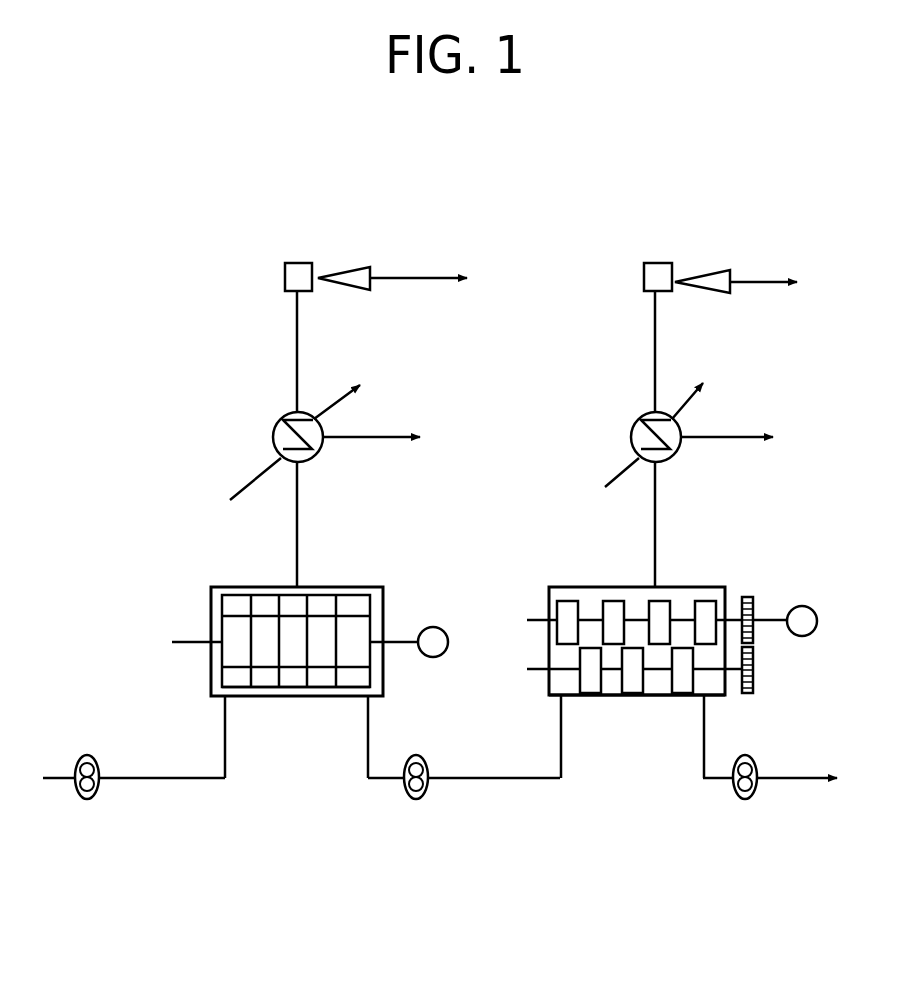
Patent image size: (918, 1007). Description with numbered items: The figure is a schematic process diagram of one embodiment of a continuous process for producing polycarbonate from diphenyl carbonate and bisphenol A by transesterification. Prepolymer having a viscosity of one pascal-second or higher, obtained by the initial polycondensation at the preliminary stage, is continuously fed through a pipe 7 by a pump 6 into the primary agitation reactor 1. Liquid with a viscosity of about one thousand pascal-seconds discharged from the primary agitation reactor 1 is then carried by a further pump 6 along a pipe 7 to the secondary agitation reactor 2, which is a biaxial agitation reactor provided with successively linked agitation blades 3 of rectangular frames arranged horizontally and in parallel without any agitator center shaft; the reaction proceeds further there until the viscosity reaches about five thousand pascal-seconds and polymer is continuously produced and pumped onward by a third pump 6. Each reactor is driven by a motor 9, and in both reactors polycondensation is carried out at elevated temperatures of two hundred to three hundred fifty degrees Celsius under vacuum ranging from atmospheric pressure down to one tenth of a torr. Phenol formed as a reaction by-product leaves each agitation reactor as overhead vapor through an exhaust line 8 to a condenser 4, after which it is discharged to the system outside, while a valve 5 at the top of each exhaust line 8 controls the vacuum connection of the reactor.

The primary agitation reactor 1 is at (211, 588).
The secondary agitation reactor 2 is at (708, 587).
The rotor 3 is at (289, 696).
The condenser 4 is at (272, 433).
The exhaust valve 5 is at (284, 281).
The pump 6 is at (87, 799).
The pipe 7 is at (195, 779).
The exhaust line 8 is at (297, 355).
The motor 9 is at (441, 628).